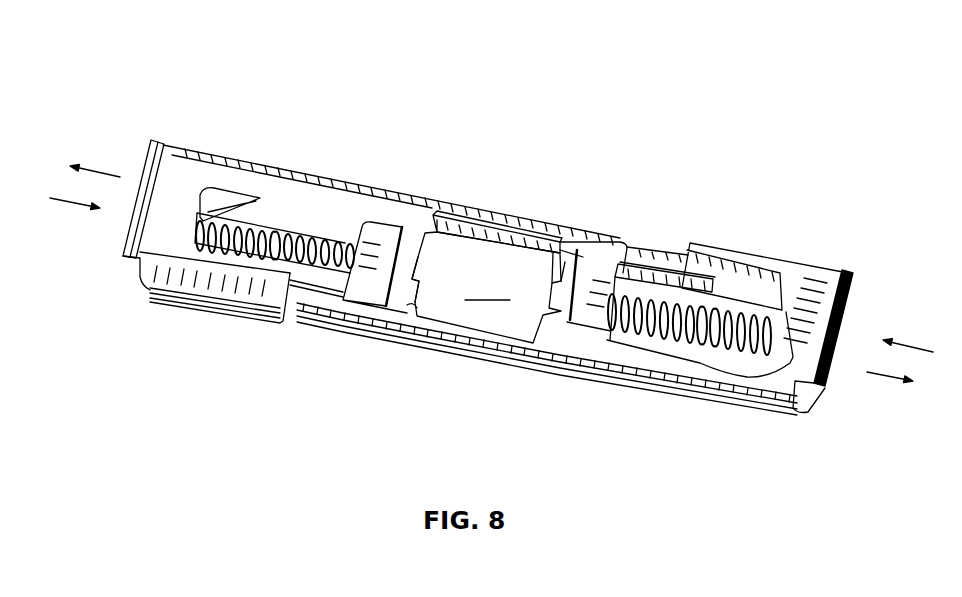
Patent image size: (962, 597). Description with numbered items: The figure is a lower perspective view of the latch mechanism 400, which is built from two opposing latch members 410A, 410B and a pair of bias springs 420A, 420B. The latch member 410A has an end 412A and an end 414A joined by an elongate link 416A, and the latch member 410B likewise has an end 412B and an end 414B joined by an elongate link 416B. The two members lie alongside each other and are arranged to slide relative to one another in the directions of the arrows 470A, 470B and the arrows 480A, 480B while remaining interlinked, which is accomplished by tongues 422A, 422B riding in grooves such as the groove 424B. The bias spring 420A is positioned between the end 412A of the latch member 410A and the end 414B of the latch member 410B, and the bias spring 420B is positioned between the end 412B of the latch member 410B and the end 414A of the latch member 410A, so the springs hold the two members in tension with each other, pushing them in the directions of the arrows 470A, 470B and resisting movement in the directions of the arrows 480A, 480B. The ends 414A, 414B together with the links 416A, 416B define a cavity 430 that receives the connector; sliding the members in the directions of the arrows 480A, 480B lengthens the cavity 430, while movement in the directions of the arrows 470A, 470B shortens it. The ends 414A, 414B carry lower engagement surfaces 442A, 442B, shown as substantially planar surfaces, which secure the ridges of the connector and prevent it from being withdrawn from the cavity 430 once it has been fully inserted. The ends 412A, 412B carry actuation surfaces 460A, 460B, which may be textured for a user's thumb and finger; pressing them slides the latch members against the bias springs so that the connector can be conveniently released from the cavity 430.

The latch mechanism 400 is at (800, 95).
The latch member 410A is at (133, 40).
The latch member 410B is at (818, 500).
The end 412A is at (170, 260).
The end 412B is at (783, 383).
The end 414A is at (593, 328).
The end 414B is at (377, 223).
The elongate link 416A is at (507, 217).
The elongate link 416B is at (473, 340).
The bias spring 420A is at (293, 230).
The bias spring 420B is at (678, 328).
The tongue 422A is at (653, 256).
The tongue 422B is at (317, 293).
The groove 424B is at (742, 272).
The cavity 430 is at (486, 287).
The lower engagement surface 442A is at (570, 258).
The lower engagement surface 442B is at (415, 307).
The actuation surface 460A is at (124, 257).
The actuation surface 460B is at (827, 377).
The arrow 470A is at (88, 165).
The arrow 470B is at (905, 340).
The arrow 480A is at (83, 210).
The arrow 480B is at (890, 378).